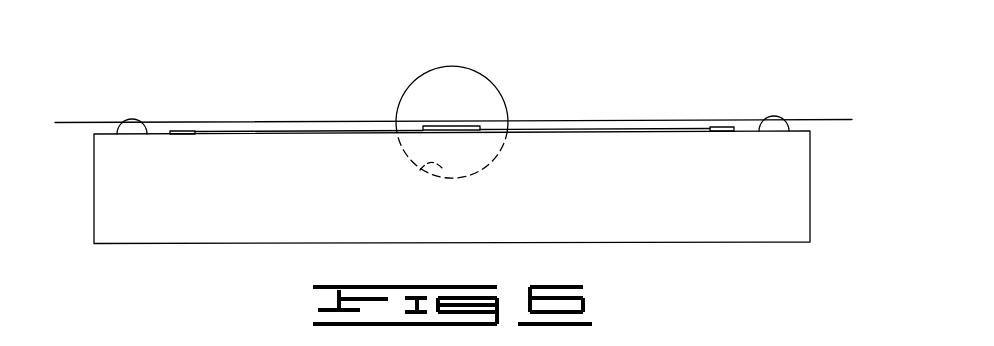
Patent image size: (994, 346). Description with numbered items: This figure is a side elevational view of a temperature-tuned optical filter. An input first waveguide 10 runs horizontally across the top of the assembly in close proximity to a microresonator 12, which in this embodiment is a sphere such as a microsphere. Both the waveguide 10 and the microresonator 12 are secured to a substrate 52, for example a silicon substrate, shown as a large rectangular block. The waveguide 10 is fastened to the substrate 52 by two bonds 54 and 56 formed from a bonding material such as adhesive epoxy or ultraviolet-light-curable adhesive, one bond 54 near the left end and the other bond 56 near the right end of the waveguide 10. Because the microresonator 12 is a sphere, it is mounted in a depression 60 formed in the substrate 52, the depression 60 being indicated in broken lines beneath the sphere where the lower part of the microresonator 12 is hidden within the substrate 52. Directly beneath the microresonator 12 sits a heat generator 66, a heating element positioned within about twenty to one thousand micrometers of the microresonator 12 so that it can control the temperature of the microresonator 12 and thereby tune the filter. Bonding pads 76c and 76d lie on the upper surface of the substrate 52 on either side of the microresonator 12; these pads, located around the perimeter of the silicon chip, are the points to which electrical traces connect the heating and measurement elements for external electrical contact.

The input first waveguide 10 is at (825, 120).
The microresonator 12 is at (468, 67).
The substrate 52 is at (747, 242).
The bond 54 is at (128, 120).
The bond 56 is at (772, 116).
The depression 60 is at (445, 177).
The heat generator 66 is at (453, 132).
The bonding pad 76c is at (180, 135).
The bonding pad 76d is at (725, 131).